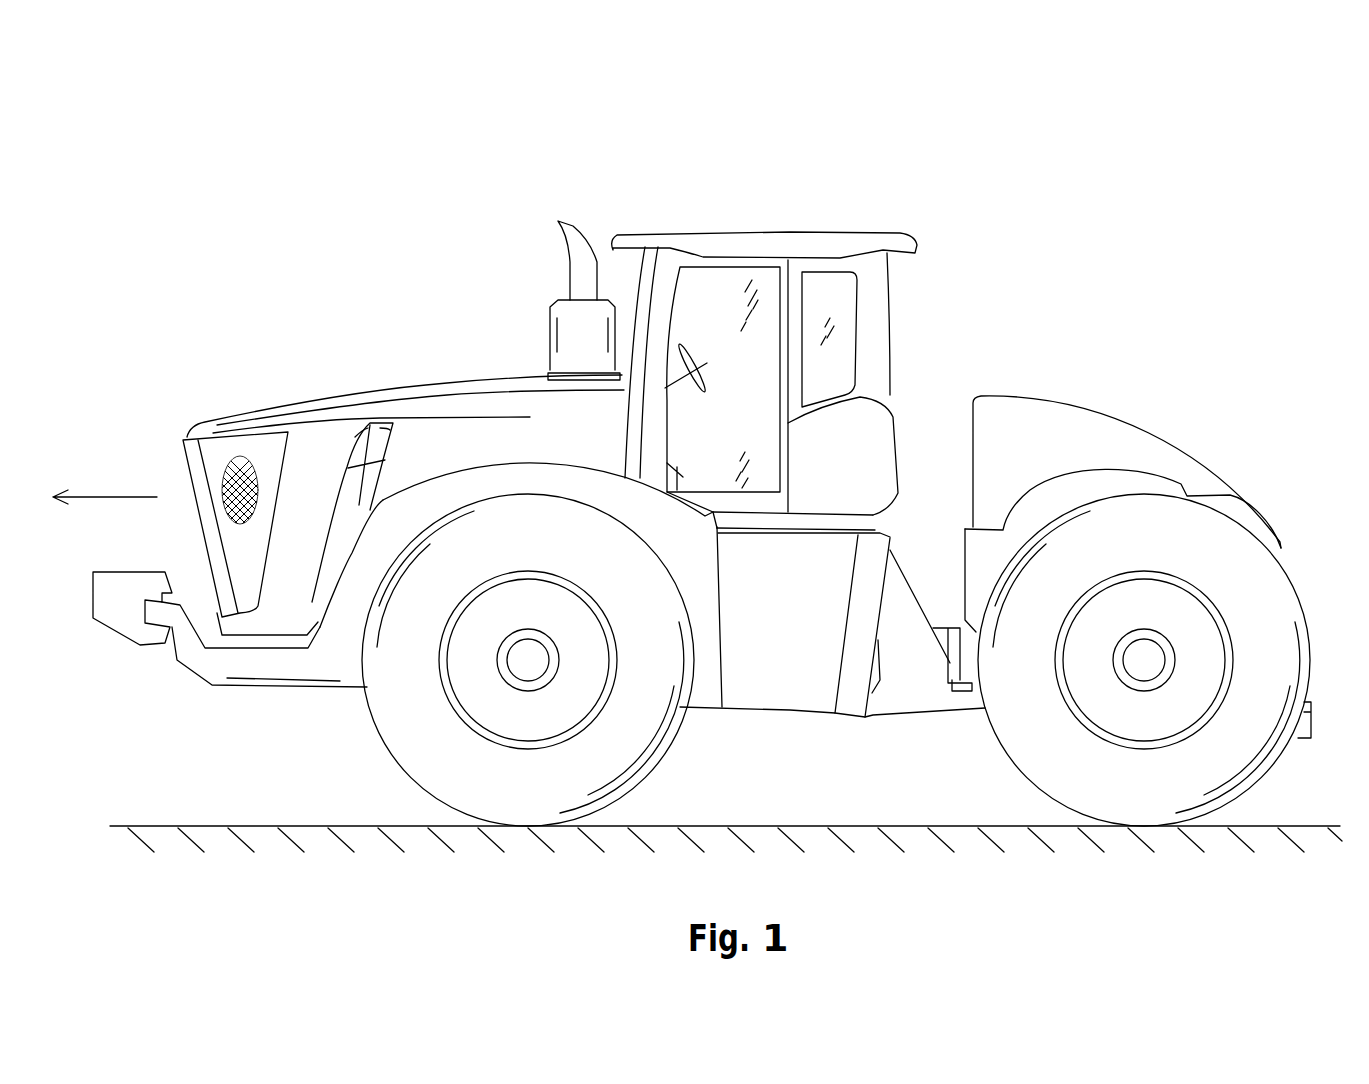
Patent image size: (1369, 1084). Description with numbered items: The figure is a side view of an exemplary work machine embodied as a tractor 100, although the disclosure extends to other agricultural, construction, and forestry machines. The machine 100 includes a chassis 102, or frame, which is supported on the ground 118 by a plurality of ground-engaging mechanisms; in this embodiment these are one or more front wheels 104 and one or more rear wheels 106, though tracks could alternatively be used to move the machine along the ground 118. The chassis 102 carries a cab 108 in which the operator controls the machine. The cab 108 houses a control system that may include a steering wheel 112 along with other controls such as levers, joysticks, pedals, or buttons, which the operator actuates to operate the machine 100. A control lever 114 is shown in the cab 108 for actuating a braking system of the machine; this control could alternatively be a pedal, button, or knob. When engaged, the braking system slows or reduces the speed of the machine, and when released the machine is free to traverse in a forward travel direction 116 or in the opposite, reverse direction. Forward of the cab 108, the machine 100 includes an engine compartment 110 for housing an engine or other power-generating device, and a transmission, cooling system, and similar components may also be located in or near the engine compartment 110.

The tractor 100 is at (702, 485).
The chassis 102 is at (780, 655).
The front wheels 104 is at (527, 813).
The rear wheels 106 is at (1153, 820).
The cab 108 is at (798, 237).
The engine compartment 110 is at (470, 427).
The steering wheel 112 is at (697, 372).
The control lever 114 is at (668, 463).
The forward travel direction 116 is at (103, 497).
The ground 118 is at (158, 823).